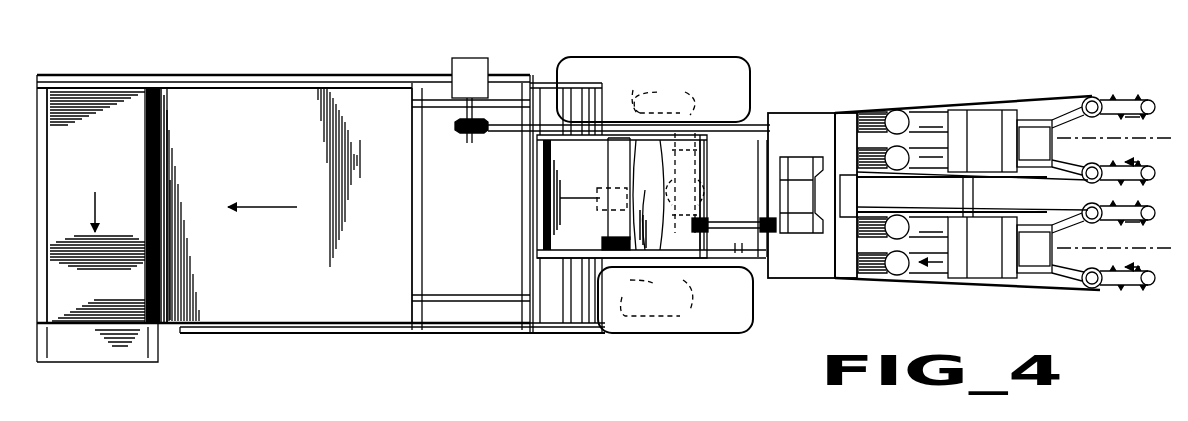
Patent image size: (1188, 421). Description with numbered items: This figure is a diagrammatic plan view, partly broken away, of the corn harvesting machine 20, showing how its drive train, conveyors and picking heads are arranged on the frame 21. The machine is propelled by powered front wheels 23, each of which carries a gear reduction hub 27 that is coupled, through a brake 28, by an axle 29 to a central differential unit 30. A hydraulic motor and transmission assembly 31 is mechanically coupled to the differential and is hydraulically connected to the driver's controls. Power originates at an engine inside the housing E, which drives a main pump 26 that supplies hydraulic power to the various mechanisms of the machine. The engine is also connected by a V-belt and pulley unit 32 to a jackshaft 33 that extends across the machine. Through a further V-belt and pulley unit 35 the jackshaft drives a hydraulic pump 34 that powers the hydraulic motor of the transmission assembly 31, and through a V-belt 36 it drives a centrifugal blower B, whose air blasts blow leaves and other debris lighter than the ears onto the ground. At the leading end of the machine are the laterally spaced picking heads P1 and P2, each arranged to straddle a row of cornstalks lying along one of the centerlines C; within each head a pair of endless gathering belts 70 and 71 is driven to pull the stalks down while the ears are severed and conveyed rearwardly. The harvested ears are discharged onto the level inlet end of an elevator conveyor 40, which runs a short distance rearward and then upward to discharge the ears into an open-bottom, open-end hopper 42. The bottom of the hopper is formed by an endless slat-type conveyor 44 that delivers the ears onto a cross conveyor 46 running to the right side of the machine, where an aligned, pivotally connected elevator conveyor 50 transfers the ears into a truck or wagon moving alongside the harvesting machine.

The harvesting machine 20 is at (803, 62).
The frame 21 is at (548, 335).
The powered front wheels 23 is at (676, 58).
The main pump 26 is at (466, 60).
The gear reduction hub 27 is at (647, 194).
The brake 28 is at (701, 200).
The axle 29 is at (700, 153).
The differential unit 30 is at (702, 170).
The hydraulic motor and transmission assembly 31 is at (612, 163).
The V-belt and pulley unit 32 is at (500, 134).
The jackshaft 33 is at (702, 198).
The hydraulic pump 34 is at (608, 232).
The V-belt and pulley unit 35 is at (648, 195).
The V-belt 36 is at (735, 255).
The elevator conveyor 40 is at (540, 180).
The hopper 42 is at (287, 327).
The endless slat-type conveyor 44 is at (241, 177).
The cross conveyor 46 is at (81, 160).
The elevator conveyor 50 is at (70, 362).
The gathering belt 70 is at (928, 288).
The gathering belt 71 is at (922, 204).
The centrifugal blower B is at (775, 180).
The housing E is at (432, 273).
The picking head P1 is at (1040, 292).
The picking head P2 is at (1003, 92).
The centerlines C is at (1113, 138).